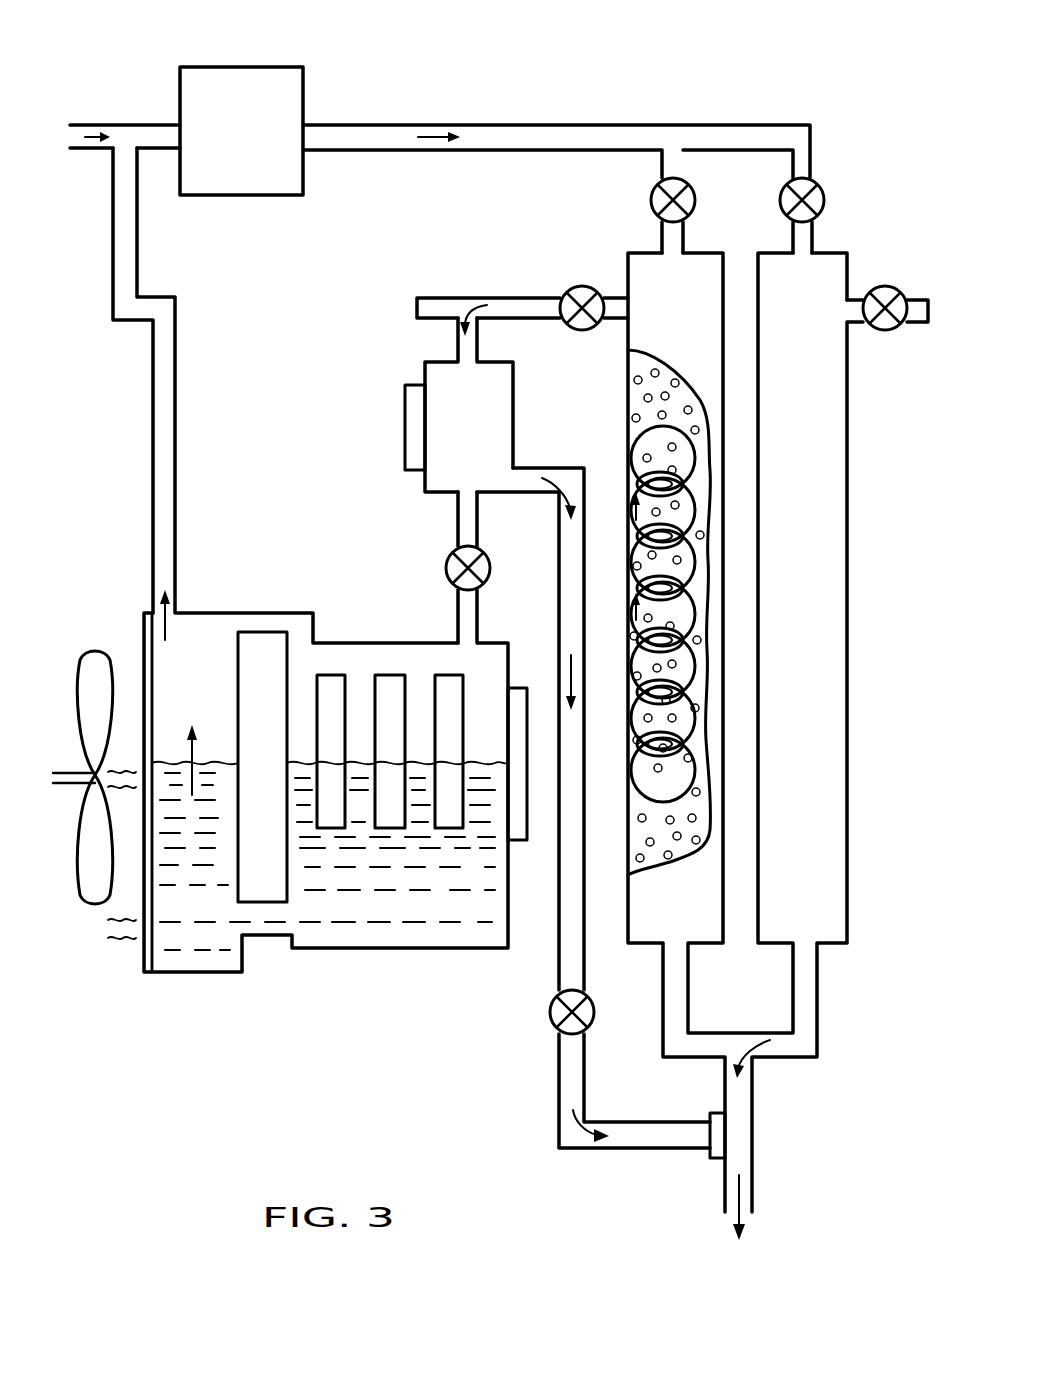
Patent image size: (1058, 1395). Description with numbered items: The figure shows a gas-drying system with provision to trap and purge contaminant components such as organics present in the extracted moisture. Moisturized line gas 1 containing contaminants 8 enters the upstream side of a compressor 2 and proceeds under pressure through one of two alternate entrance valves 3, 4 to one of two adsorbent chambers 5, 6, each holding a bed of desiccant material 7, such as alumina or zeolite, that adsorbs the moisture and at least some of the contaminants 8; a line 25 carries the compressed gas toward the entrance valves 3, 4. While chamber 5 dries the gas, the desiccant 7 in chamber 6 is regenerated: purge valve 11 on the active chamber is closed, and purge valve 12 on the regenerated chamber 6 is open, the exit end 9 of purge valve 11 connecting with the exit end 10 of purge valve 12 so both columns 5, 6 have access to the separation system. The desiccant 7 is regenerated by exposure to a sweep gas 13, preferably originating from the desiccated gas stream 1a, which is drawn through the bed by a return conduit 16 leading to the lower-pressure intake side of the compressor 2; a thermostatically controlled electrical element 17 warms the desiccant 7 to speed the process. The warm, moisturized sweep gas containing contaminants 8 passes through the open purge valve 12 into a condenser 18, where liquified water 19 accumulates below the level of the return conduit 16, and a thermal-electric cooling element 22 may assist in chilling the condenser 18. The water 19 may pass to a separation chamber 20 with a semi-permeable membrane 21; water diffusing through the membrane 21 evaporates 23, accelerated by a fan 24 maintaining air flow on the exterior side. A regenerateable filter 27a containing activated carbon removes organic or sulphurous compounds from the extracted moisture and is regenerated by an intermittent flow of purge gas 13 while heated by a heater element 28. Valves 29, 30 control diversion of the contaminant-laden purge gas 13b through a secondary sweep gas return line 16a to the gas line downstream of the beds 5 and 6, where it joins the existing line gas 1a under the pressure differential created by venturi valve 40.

The moisturized line gas 1 is at (50, 137).
The desiccated gas stream 1a is at (752, 1042).
The compressor 2 is at (231, 72).
The entrance valve 3 is at (824, 200).
The entrance valve 4 is at (695, 212).
The adsorbent chamber 5 is at (851, 885).
The adsorbent chamber 6 is at (725, 885).
The desiccant material 7 is at (651, 397).
The contaminants 8 is at (70, 150).
The exit end of purge valve 11 9 is at (932, 318).
The exit end of purge valve 12 10 is at (414, 312).
The purge valve 11 is at (893, 286).
The purge valve 12 is at (590, 285).
The sweep gas 13 is at (455, 305).
The contaminant-laden purge gas 13b is at (547, 490).
The return conduit 16 is at (153, 433).
The secondary sweep gas return line 16a is at (577, 473).
The thermostatically controlled electrical element 17 is at (647, 481).
The condenser 18 is at (383, 643).
The liquified water 19 is at (382, 931).
The separation chamber 20 is at (205, 613).
The semi-permeable membrane 21 is at (144, 648).
The thermal-electric cooling element 22 is at (512, 836).
The evaporated water 23 is at (131, 762).
The fan 24 is at (91, 890).
The gas line 25 is at (634, 123).
The regenerateable filter 27a is at (437, 376).
The heater element 28 is at (411, 432).
The valve 29 is at (450, 566).
The valve 30 is at (551, 1012).
The venturi valve 40 is at (715, 1113).